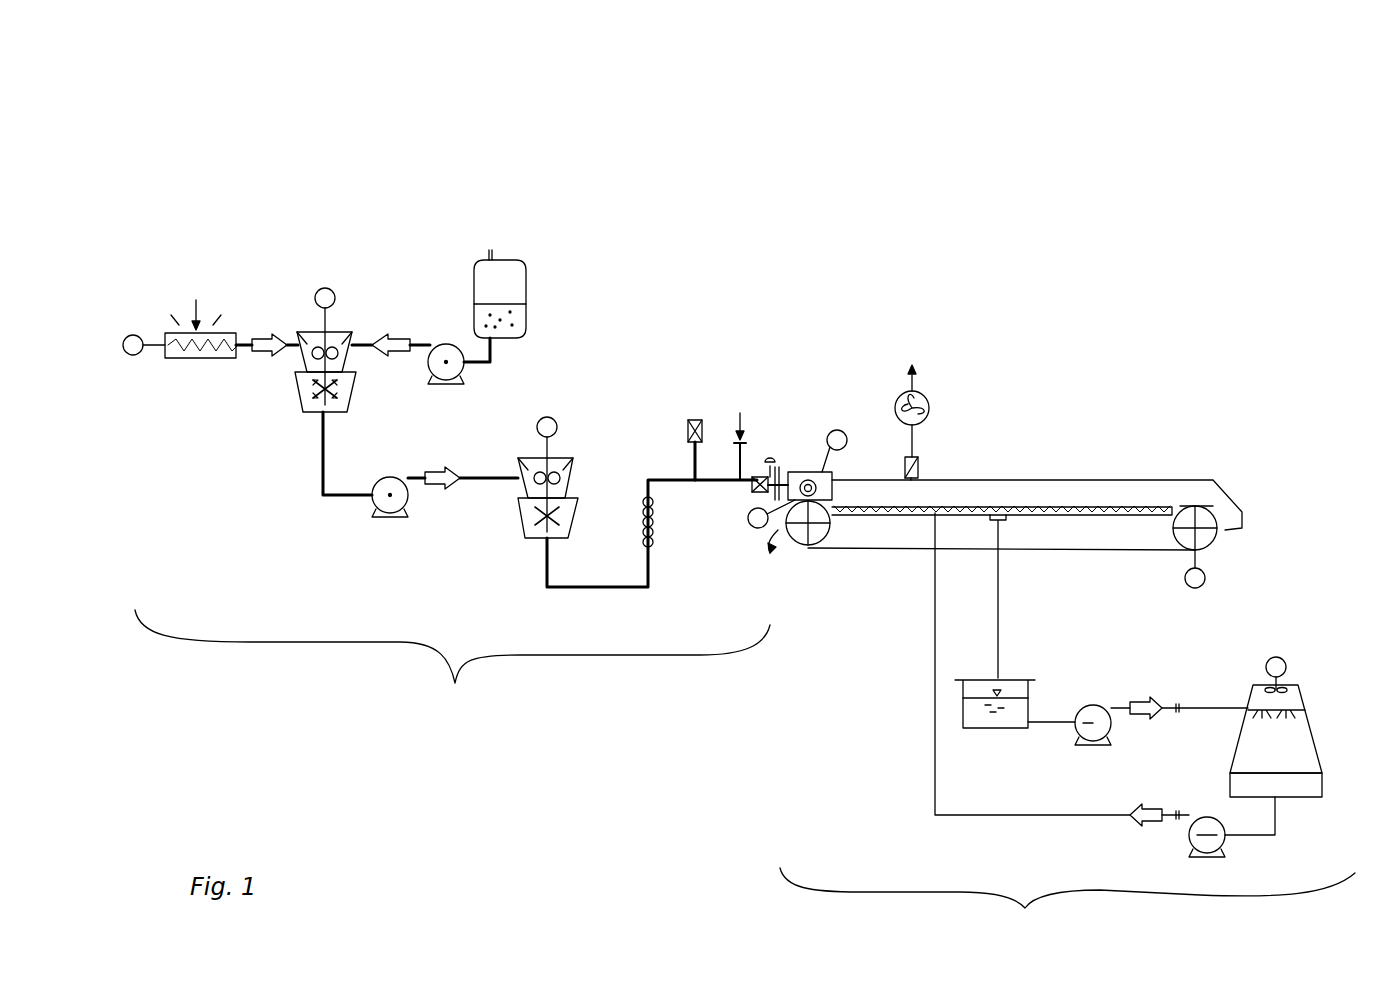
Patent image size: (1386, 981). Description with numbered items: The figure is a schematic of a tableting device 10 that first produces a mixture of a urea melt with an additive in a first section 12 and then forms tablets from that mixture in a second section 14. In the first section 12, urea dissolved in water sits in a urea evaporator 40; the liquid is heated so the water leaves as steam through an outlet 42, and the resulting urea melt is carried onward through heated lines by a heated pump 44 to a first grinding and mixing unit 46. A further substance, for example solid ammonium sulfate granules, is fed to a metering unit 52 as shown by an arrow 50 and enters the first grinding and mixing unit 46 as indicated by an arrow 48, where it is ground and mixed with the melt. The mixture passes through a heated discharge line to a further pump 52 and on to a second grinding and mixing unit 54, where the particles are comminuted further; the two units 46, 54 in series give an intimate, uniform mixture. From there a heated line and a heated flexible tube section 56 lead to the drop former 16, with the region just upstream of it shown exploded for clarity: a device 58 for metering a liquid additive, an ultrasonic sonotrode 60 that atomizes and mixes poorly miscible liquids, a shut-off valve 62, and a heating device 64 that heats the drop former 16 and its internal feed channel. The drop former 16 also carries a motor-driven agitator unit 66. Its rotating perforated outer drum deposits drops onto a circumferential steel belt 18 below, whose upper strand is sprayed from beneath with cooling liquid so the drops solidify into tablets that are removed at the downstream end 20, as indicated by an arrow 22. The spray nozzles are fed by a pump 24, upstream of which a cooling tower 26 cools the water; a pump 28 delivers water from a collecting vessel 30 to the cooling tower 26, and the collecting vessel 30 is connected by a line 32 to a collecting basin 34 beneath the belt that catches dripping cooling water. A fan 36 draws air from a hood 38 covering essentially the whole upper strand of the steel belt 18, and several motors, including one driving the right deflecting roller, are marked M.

The tableting device 10 is at (790, 272).
The first section 12 is at (452, 672).
The second section 14 is at (1067, 909).
The drop former 16 is at (809, 478).
The steel belt 18 is at (858, 550).
The downstream end 20 is at (1227, 488).
The arrow 22 is at (1236, 560).
The pump 24 is at (1185, 838).
The cooling tower 26 is at (1300, 742).
The pump 28 is at (1097, 706).
The collecting vessel 30 is at (1012, 680).
The line 32 is at (1000, 624).
The collecting basin 34 is at (1047, 518).
The fan 36 is at (930, 402).
The hood 38 is at (1012, 480).
The urea evaporator 40 is at (517, 283).
The outlet 42 is at (494, 255).
The pump 44 is at (444, 358).
The first grinding and mixing unit 46 is at (345, 320).
The arrow 48 is at (268, 340).
The arrow 50 is at (200, 318).
The metering unit / pump 52 is at (196, 358).
The second grinding and mixing unit 54 is at (570, 432).
The heated flexible tube section 56 is at (656, 522).
The device 58 is at (699, 416).
The ultrasonic sonotrode 60 is at (748, 428).
The shut-off valve 62 is at (770, 460).
The heating device 64 is at (796, 470).
The agitator unit 66 is at (790, 505).